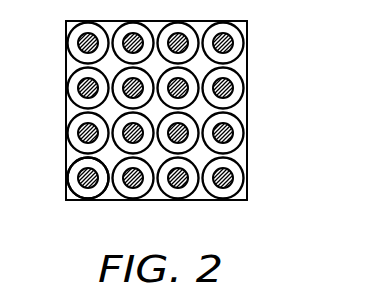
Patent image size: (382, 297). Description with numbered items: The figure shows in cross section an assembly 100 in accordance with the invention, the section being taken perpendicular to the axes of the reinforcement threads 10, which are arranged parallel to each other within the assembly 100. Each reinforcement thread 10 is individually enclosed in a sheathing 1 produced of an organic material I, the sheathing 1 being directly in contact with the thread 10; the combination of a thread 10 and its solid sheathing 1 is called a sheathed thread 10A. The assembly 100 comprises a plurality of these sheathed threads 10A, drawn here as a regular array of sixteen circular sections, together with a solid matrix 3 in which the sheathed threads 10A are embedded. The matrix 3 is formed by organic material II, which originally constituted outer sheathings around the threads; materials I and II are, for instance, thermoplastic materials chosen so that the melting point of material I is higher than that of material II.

The assembly 100 is at (276, 52).
The solid matrix 3 is at (67, 110).
The reinforcement thread 10 is at (246, 129).
The sheathing 1 is at (246, 171).
The sheathed thread 10A is at (85, 201).
The organic material I is at (246, 188).
The organic material II is at (245, 104).